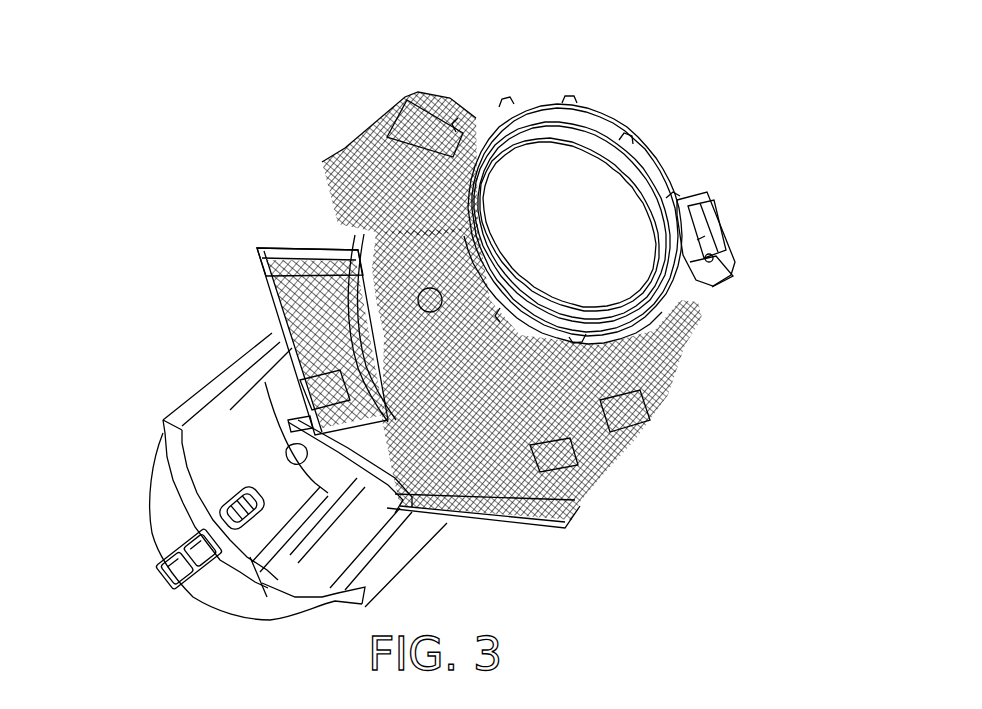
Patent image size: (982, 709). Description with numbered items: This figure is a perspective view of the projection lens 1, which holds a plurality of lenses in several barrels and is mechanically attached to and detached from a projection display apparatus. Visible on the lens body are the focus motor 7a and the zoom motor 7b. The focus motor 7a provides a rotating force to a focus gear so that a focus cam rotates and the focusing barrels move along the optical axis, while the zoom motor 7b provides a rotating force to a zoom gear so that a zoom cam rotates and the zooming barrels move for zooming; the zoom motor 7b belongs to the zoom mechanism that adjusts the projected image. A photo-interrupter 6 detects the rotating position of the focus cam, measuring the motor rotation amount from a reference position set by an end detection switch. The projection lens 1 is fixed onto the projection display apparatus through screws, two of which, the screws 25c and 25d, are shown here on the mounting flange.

The projection lens 1 is at (714, 136).
The photo-interrupter 6 is at (442, 312).
The screw 25c is at (293, 257).
The screw 25d is at (340, 387).
The focus motor 7a is at (633, 433).
The zoom motor 7b is at (567, 455).